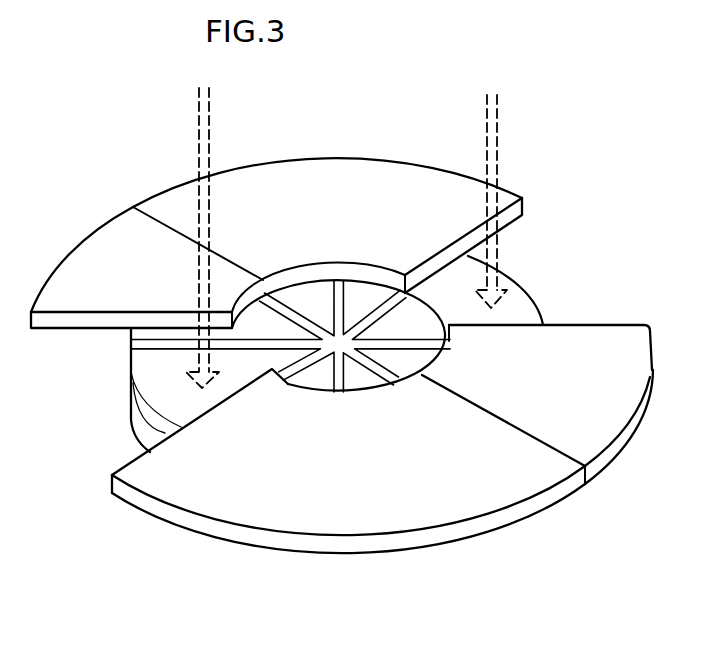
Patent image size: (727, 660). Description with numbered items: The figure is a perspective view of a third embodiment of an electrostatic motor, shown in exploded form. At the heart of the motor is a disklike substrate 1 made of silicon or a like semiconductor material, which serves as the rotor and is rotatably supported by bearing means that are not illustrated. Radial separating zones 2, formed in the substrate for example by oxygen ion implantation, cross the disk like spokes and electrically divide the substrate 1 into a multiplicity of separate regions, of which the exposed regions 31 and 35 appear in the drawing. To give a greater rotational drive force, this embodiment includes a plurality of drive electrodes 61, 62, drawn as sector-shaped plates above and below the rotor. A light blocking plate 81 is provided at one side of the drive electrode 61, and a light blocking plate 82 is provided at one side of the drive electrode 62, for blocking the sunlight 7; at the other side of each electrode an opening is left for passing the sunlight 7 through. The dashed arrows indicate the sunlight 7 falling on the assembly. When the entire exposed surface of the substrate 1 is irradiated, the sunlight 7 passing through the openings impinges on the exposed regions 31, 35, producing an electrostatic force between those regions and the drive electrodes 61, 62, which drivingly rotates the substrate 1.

The disklike substrate 1 is at (523, 260).
The radial separating zones 2 is at (130, 343).
The sunlight 7 is at (199, 131).
The region of the substrate 31 is at (162, 388).
The region of the substrate 35 is at (517, 304).
The drive electrode 61 is at (95, 248).
The drive electrode 62 is at (598, 416).
The light blocking plate 81 is at (340, 173).
The light blocking plate 82 is at (365, 518).